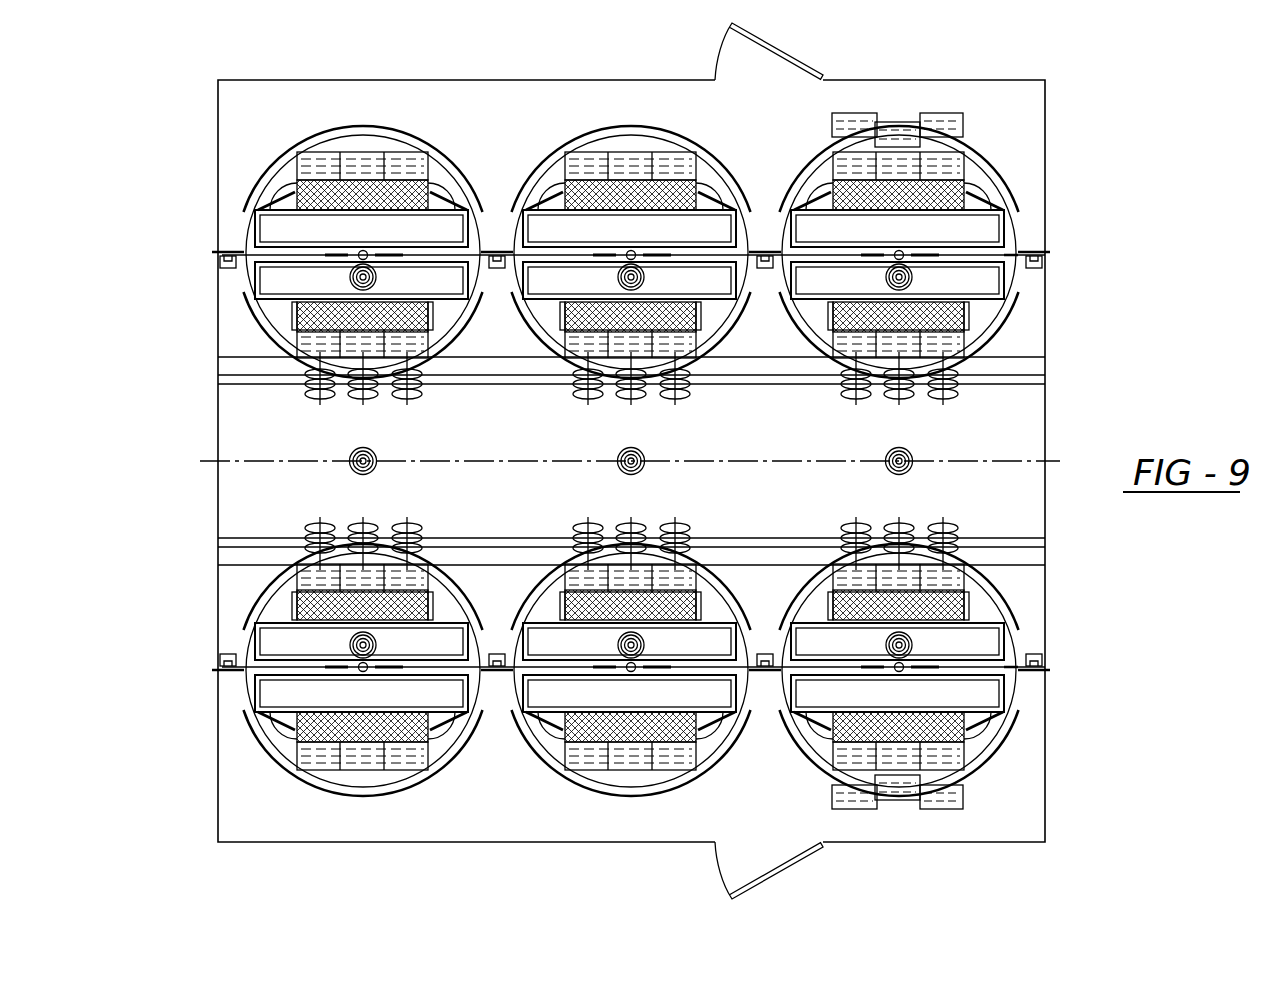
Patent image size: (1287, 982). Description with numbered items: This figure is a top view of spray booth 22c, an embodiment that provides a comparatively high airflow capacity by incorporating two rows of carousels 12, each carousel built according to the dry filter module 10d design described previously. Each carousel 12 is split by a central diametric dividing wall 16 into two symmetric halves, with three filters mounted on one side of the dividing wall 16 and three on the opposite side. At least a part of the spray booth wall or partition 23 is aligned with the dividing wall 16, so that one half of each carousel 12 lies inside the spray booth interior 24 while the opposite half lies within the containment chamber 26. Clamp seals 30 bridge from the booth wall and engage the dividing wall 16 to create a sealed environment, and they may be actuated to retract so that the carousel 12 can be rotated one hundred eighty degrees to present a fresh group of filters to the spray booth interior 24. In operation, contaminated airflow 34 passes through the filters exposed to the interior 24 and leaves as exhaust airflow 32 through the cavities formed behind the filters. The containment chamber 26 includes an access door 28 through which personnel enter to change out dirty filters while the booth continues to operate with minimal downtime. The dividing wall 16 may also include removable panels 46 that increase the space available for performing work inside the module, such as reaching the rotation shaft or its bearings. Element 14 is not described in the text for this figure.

The spray booth 22c is at (1010, 60).
The containment chamber 26 is at (1018, 108).
The access door 28 is at (797, 61).
The dry filter module 10d is at (987, 166).
The carousel 12 is at (963, 262).
The shaft 14 is at (1007, 224).
The central diametric dividing wall 16 is at (1065, 244).
The spray booth wall or partition 23 is at (1040, 250).
The spray booth interior 24 is at (778, 434).
The clamp seals 30 is at (1023, 672).
The exhaust airflow 32 is at (270, 309).
The contaminated airflow 34 is at (345, 396).
The removable panels 46 is at (963, 645).